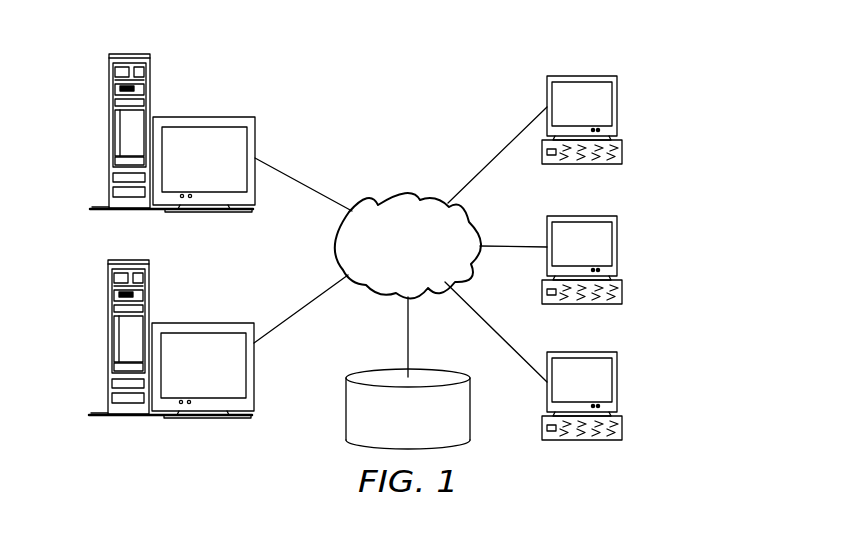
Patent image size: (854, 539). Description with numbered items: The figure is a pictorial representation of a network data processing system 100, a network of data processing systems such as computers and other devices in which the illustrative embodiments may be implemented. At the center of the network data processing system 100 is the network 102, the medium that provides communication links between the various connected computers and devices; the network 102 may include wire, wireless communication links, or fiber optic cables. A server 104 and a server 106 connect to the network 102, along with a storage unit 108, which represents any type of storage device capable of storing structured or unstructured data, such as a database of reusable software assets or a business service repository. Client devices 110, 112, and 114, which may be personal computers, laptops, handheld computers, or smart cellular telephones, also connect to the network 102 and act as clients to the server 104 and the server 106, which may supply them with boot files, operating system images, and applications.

The network data processing system 100 is at (455, 99).
The network 102 is at (378, 192).
The server 104 is at (108, 135).
The server 106 is at (108, 340).
The storage unit 108 is at (346, 418).
The client device 110 is at (617, 104).
The client device 112 is at (617, 244).
The client device 114 is at (617, 381).